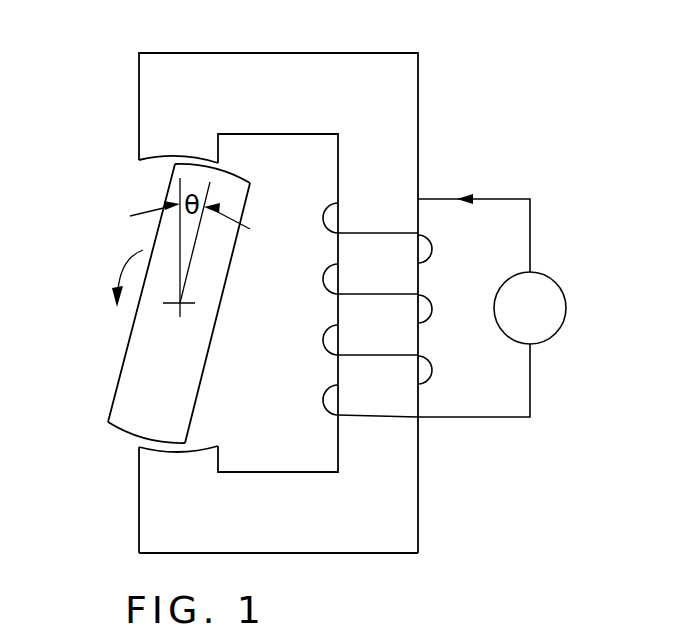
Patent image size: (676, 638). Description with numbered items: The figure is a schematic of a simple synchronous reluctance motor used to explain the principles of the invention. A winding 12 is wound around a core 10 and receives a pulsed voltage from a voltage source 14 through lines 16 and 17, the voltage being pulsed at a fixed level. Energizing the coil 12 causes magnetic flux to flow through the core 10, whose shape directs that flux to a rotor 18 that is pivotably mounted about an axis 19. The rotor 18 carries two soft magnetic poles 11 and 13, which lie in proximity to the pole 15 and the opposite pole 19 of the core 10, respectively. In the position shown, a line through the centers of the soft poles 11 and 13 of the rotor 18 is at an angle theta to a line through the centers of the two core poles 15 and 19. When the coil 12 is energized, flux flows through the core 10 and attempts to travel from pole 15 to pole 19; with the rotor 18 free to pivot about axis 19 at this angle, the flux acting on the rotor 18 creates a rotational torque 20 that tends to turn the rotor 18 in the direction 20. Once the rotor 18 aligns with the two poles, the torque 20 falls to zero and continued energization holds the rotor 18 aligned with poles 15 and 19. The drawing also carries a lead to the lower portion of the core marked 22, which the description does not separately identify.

The core 10 is at (152, 42).
The soft magnetic pole 11 is at (237, 173).
The winding 12 is at (432, 240).
The soft magnetic pole 13 is at (120, 430).
The voltage source 14 is at (545, 272).
The pole 15 is at (160, 164).
The line 16 is at (516, 198).
The line 17 is at (507, 418).
The rotor 18 is at (208, 363).
The axis 19 is at (177, 305).
The rotational torque 20 is at (123, 278).
The magnetic core 22 is at (345, 545).